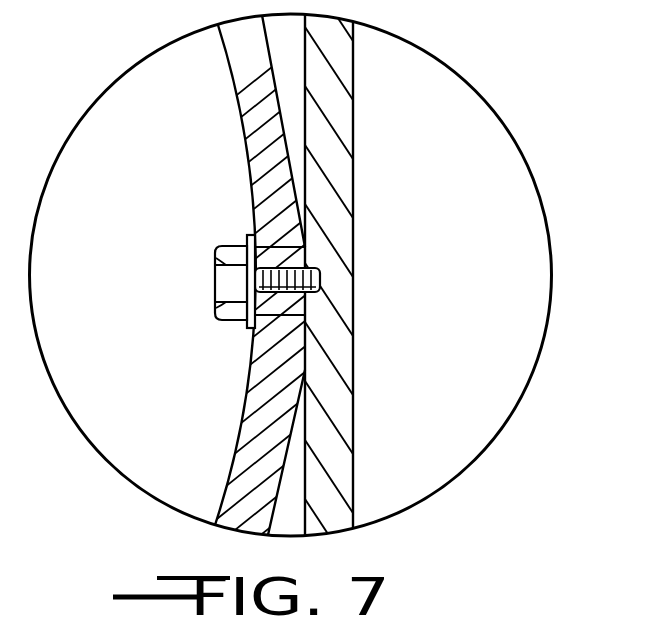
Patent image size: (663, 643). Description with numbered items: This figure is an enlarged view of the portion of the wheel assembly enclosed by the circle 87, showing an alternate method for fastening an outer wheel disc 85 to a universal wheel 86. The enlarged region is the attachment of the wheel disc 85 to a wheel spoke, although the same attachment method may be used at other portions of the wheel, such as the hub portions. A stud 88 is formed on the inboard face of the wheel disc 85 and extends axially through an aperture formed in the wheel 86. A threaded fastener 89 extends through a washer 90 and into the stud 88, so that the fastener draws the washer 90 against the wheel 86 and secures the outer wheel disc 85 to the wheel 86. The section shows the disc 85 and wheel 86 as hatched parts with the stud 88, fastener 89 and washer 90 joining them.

The outer wheel disc 85 is at (344, 128).
The universal wheel 86 is at (247, 79).
The circle 87 is at (487, 100).
The stud 88 is at (251, 326).
The threaded fastener 89 is at (231, 284).
The washer 90 is at (251, 238).